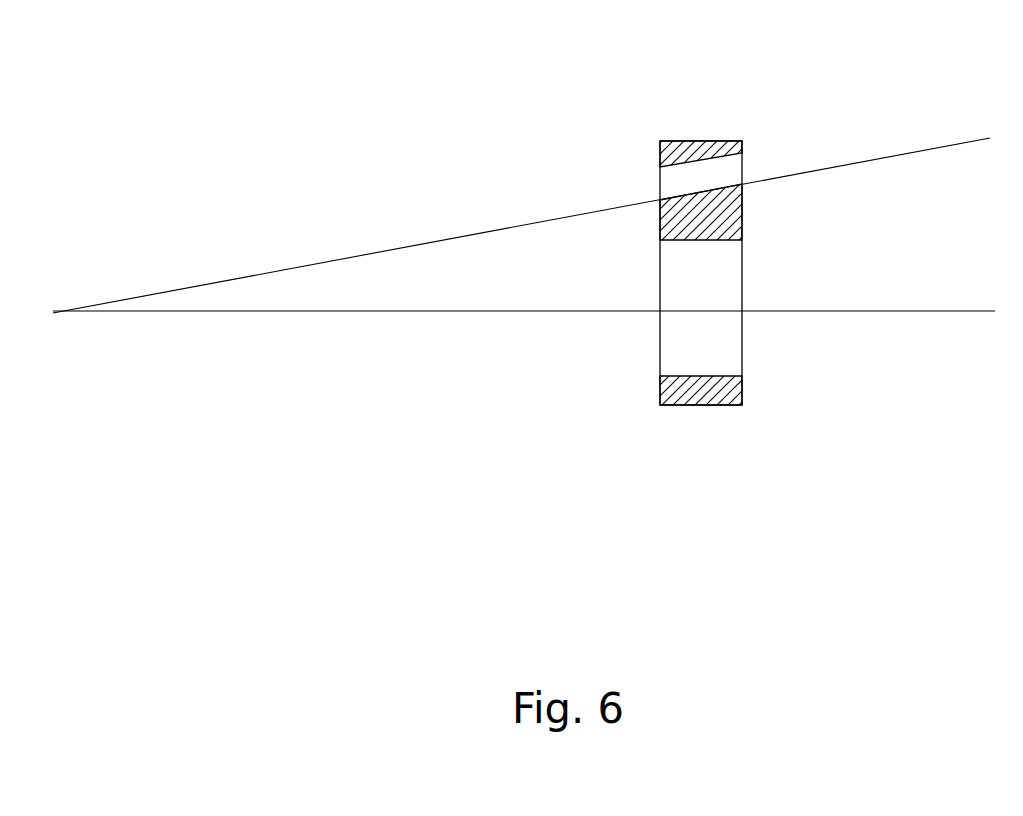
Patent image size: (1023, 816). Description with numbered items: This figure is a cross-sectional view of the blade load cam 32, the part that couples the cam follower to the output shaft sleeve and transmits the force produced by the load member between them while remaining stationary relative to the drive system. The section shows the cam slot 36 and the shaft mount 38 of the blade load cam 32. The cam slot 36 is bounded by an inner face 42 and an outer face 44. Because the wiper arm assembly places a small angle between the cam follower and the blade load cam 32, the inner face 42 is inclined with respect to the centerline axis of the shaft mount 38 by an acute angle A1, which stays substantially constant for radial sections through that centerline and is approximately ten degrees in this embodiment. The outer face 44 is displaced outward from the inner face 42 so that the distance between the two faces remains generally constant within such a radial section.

The blade load cam 32 is at (600, 440).
The cam slot 36 is at (693, 140).
The shaft mount 38 is at (716, 376).
The inner face 42 is at (728, 186).
The outer face 44 is at (742, 162).
The acute angle A1 is at (913, 155).